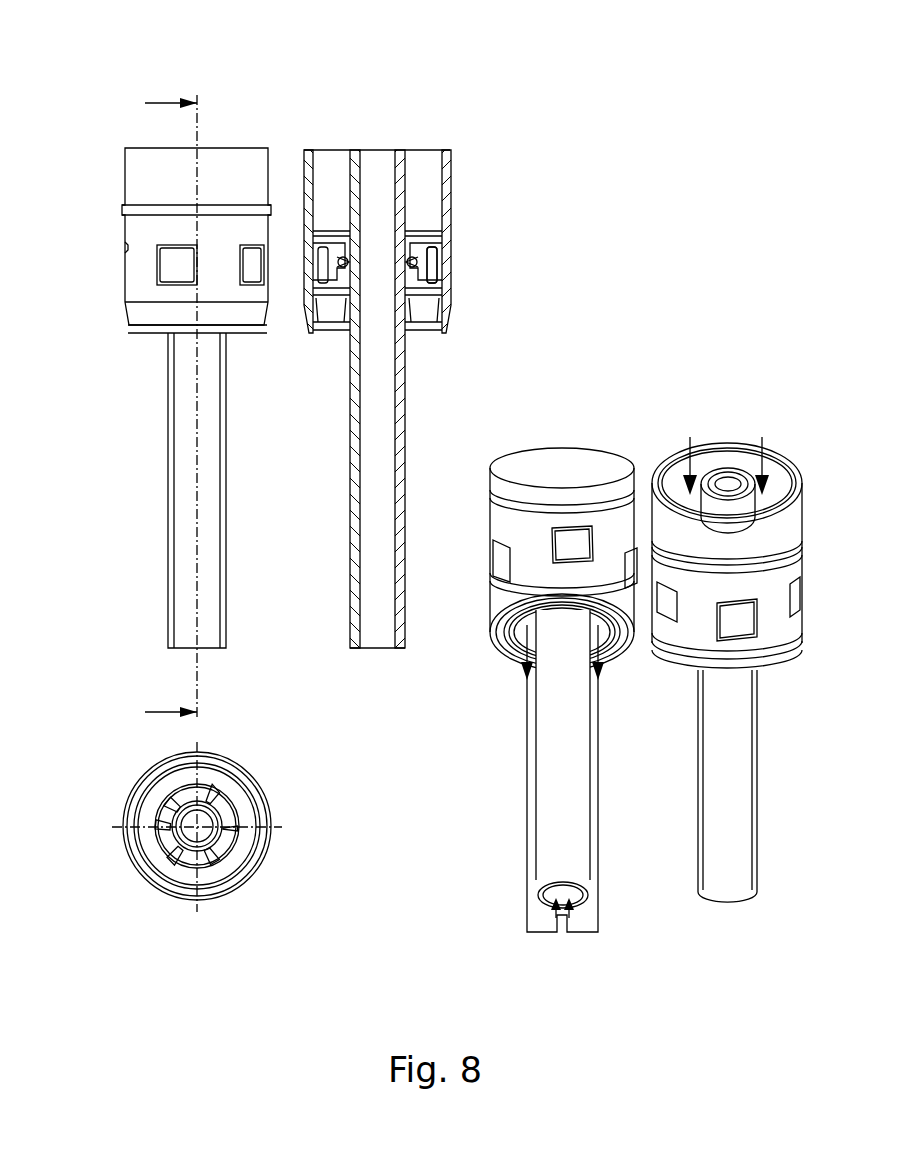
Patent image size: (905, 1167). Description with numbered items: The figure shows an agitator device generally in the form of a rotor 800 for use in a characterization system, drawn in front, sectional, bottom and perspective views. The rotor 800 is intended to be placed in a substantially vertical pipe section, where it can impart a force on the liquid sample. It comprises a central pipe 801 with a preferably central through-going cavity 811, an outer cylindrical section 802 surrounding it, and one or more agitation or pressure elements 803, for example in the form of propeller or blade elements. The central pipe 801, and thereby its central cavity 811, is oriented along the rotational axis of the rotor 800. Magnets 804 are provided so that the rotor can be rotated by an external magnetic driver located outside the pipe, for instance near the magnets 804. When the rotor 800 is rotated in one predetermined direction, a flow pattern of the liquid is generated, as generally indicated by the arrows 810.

The rotor 800 is at (84, 32).
The central pipe 801 is at (350, 520).
The outer cylindrical section 802 is at (313, 165).
The agitation or pressure elements 803 is at (418, 273).
The magnets 804 is at (436, 273).
The arrows 810 is at (527, 805).
The through-going cavity 811 is at (379, 160).